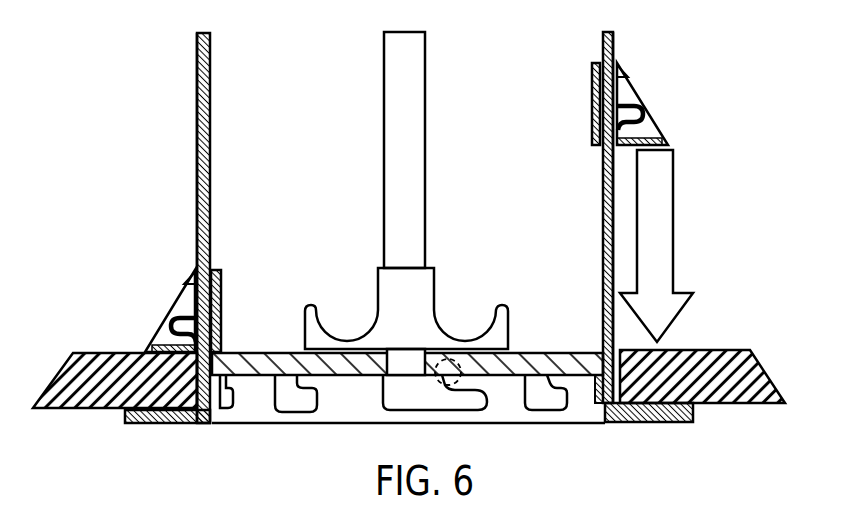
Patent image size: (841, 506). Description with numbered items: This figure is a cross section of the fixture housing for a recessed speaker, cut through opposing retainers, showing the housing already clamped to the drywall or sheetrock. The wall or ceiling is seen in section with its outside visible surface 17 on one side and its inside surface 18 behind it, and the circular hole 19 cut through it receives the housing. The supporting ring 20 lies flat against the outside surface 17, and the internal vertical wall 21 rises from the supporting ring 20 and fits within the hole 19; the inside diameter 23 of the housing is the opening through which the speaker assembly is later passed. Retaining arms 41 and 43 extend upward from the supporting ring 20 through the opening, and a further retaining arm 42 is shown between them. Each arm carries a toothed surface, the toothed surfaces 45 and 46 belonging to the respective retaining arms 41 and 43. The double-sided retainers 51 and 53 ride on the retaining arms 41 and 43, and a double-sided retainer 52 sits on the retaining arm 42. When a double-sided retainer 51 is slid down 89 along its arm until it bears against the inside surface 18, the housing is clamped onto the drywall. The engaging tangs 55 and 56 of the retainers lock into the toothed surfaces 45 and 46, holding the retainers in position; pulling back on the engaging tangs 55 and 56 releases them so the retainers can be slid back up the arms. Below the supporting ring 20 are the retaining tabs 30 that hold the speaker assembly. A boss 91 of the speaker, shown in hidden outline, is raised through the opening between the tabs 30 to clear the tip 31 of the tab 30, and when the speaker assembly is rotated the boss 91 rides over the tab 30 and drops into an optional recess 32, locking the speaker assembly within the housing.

The outside surface 17 is at (754, 402).
The inside surface 18 is at (95, 353).
The hole 19 is at (240, 352).
The supporting ring 20 is at (125, 425).
The vertical wall 21 is at (546, 377).
The inside diameter 23 is at (265, 425).
The retaining tab 30 is at (474, 382).
The tip 31 is at (480, 404).
The recess 32 is at (446, 389).
The retaining arm 41 is at (603, 47).
The retaining arm 42 is at (425, 148).
The retaining arm 43 is at (210, 128).
The toothed surface 45 is at (198, 192).
The toothed surface 46 is at (615, 235).
The double-sided retainer 51 is at (630, 79).
The double-sided retainer 52 is at (378, 290).
The double-sided retainer 53 is at (222, 282).
The engaging tang 55 is at (178, 318).
The engaging tang 56 is at (640, 108).
The down direction 89 is at (675, 254).
The boss 91 is at (450, 358).